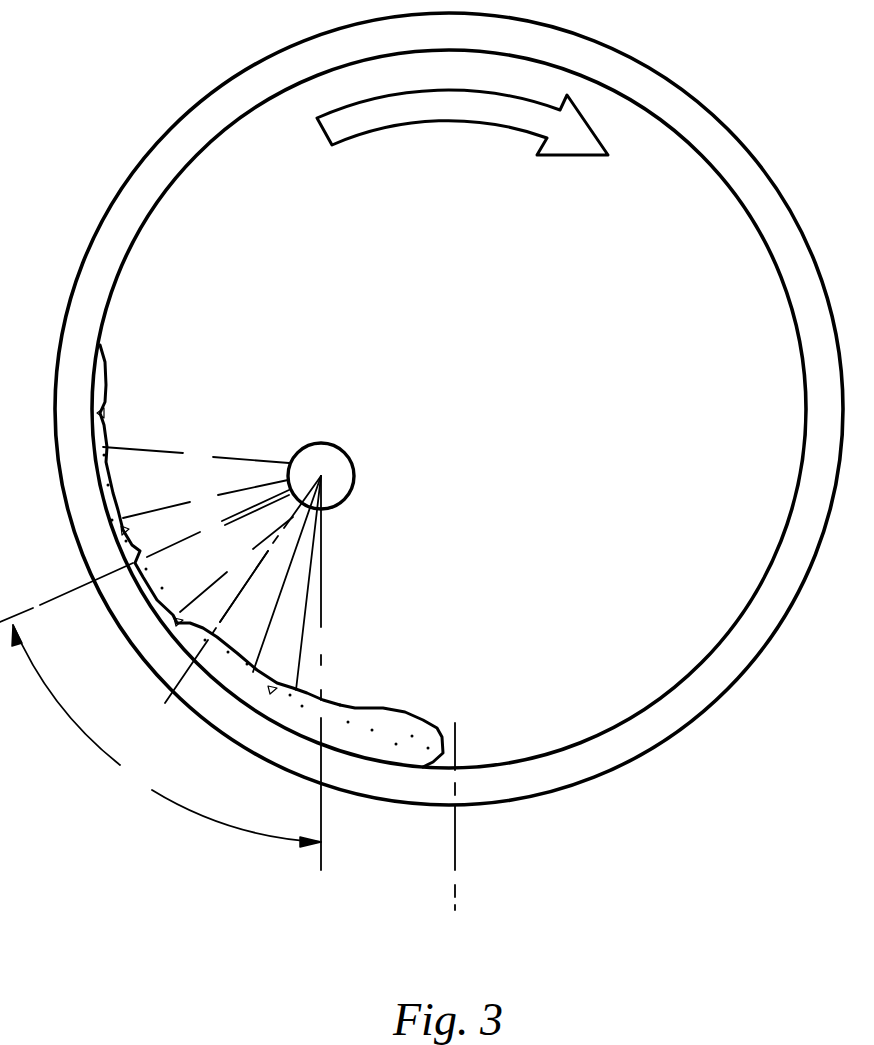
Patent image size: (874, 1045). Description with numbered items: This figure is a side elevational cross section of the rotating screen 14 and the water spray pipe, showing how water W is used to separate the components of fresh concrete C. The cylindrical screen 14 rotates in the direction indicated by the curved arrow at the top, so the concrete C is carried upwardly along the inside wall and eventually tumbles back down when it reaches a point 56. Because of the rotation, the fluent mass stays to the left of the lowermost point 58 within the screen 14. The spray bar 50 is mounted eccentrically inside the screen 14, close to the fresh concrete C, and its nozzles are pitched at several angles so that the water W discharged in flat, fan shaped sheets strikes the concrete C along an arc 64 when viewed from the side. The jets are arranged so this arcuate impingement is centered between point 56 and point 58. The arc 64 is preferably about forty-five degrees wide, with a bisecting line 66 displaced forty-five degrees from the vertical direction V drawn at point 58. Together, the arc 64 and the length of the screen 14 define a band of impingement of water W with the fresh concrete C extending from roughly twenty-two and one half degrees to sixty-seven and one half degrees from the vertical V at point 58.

The screen 14 is at (172, 142).
The spray bar 50 is at (348, 455).
The point 56 is at (102, 350).
The lowermost point 58 is at (452, 762).
The arc 64 is at (166, 673).
The bisecting line 66 is at (230, 615).
The water W is at (243, 460).
The concrete C is at (410, 731).
The vertical direction V is at (455, 868).